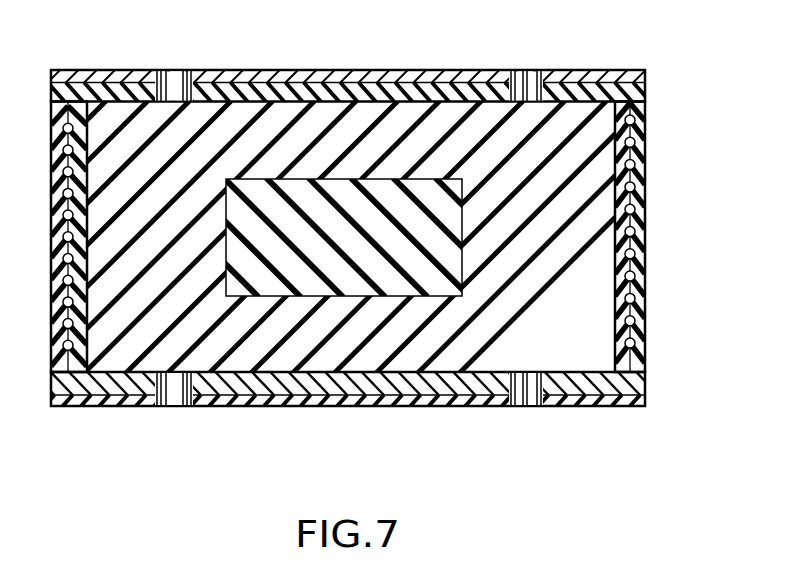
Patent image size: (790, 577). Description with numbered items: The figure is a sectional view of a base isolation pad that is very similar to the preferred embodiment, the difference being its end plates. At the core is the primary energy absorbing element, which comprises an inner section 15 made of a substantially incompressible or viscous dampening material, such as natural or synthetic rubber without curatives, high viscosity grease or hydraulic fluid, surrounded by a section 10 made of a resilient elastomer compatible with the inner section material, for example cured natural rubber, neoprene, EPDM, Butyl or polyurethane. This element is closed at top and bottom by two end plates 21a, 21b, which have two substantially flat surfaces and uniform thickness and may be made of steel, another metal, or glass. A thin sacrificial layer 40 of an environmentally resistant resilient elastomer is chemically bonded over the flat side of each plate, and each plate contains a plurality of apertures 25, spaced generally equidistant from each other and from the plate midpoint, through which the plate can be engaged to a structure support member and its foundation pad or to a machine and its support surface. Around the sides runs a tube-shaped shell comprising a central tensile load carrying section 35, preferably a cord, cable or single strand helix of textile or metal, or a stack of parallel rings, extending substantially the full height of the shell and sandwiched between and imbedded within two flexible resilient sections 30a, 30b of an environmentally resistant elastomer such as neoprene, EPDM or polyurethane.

The section 10 is at (120, 358).
The inner section 15 is at (274, 288).
The end plate 21a is at (441, 78).
The end plate 21b is at (377, 382).
The apertures 25 is at (175, 90).
The flexible resilient section 30a is at (638, 158).
The flexible resilient section 30b is at (638, 270).
The central tensile load carrying section 35 is at (638, 211).
The sacrificial layer 40 is at (305, 78).